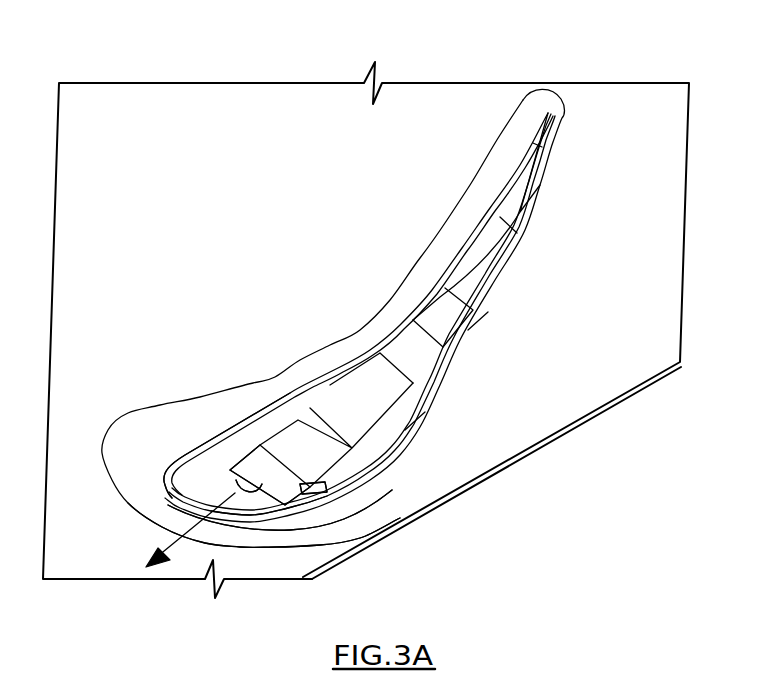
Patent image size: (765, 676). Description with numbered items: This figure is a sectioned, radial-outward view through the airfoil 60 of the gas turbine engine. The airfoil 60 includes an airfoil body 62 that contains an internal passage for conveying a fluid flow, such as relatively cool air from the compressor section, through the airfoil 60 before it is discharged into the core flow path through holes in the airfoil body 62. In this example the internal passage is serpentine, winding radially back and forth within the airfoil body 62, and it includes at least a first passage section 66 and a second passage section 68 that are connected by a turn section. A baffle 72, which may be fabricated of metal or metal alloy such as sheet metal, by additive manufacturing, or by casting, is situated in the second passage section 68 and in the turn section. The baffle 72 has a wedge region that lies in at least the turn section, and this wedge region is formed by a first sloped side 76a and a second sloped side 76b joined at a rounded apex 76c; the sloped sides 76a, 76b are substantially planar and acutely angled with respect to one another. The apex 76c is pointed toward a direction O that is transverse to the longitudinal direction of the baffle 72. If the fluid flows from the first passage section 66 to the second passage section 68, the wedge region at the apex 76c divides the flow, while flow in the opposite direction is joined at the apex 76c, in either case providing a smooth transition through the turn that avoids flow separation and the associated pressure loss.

The airfoil 60 is at (391, 457).
The airfoil body 62 is at (273, 520).
The first passage section 66 is at (213, 489).
The second passage section 68 is at (321, 510).
The baffle 72 is at (360, 508).
The first sloped side 76a is at (252, 450).
The second sloped side 76b is at (316, 468).
The apex 76c is at (204, 457).
The direction O is at (166, 548).